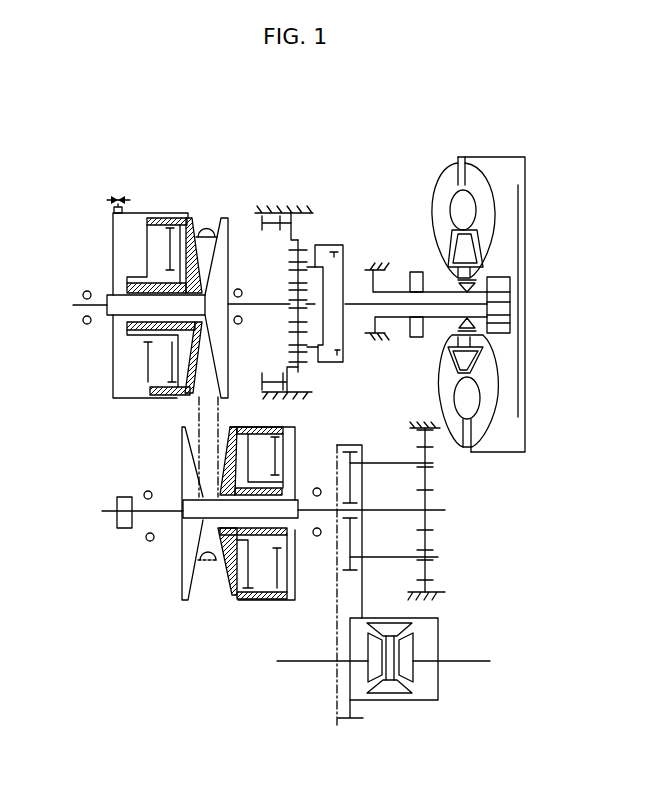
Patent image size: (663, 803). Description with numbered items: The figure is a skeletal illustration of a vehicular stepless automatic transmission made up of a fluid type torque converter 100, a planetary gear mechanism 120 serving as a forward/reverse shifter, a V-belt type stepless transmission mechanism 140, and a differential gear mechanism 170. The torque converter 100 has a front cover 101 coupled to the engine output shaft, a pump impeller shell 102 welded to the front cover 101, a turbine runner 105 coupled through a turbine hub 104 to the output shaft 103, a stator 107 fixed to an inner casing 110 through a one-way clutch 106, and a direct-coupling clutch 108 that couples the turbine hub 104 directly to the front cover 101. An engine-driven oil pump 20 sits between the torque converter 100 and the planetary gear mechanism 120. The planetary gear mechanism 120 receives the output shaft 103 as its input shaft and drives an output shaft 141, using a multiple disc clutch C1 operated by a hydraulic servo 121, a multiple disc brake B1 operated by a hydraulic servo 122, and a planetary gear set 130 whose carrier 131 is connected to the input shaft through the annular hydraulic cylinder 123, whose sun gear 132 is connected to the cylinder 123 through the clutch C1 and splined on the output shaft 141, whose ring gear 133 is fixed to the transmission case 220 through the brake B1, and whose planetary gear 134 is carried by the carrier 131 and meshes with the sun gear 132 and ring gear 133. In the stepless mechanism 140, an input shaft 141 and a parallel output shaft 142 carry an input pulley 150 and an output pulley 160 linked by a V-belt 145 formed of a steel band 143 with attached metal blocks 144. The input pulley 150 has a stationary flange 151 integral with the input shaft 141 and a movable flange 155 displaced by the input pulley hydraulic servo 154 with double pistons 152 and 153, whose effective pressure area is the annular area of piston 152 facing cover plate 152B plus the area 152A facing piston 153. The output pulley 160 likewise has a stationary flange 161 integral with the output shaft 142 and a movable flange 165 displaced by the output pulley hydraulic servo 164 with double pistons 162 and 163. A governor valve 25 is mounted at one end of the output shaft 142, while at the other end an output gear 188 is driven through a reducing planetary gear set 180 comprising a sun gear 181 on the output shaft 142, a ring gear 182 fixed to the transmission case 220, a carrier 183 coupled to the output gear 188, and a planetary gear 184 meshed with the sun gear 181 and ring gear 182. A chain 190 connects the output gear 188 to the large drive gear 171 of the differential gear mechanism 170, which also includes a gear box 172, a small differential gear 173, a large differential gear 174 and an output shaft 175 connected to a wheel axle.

The oil pump 20 is at (413, 340).
The governor valve 25 is at (120, 528).
The fluid type torque converter 100 is at (452, 152).
The front cover 101 is at (527, 183).
The pump impeller shell 102 is at (438, 178).
The output shaft 103 is at (473, 305).
The turbine hub 104 is at (510, 300).
The turbine runner 105 is at (495, 225).
The one-way clutch 106 is at (472, 282).
The stator 107 is at (468, 255).
The direct-coupling clutch 108 is at (518, 207).
The inner casing 110 is at (393, 287).
The planetary gear mechanism 120 is at (277, 200).
The hydraulic servo 121 is at (343, 246).
The hydraulic servo 122 is at (262, 228).
The annular hydraulic cylinder 123 is at (329, 247).
The planetary gear set 130 is at (309, 374).
The carrier 131 is at (343, 277).
The sun gear 132 is at (294, 298).
The ring gear 133 is at (307, 360).
The planetary gear 134 is at (312, 347).
The V-belt type stepless transmission mechanism 140 is at (166, 198).
The input shaft 141 is at (262, 303).
The output shaft 142 is at (163, 518).
The steel band 143 is at (185, 578).
The metal blocks 144 is at (208, 560).
The V-belt 145 is at (200, 397).
The input pulley 150 is at (198, 214).
The stationary flange 151 is at (222, 347).
The piston 152 is at (177, 368).
The piston area 152A is at (175, 353).
The cover plate 152B is at (113, 335).
The piston 153 is at (173, 367).
The input pulley hydraulic servo 154 is at (110, 243).
The movable flange 155 is at (177, 216).
The output pulley 160 is at (205, 615).
The stationary flange 161 is at (183, 568).
The piston 162 is at (296, 573).
The piston 163 is at (239, 583).
The output pulley hydraulic servo 164 is at (276, 606).
The movable flange 165 is at (230, 578).
The differential gear mechanism 170 is at (448, 607).
The large drive gear 171 is at (348, 688).
The gear box 172 is at (407, 701).
The small differential gear 173 is at (387, 686).
The large differential gear 174 is at (410, 670).
The output shaft 175 is at (302, 663).
The reducing planetary gear set 180 is at (468, 463).
The sun gear 181 is at (427, 495).
The ring gear 182 is at (422, 433).
The carrier 183 is at (408, 463).
The planetary gear 184 is at (431, 468).
The output gear 188 is at (337, 450).
The chain 190 is at (342, 730).
The transmission case 220 is at (323, 245).
The multiple disc brake B1 is at (295, 169).
The multiple disc clutch C1 is at (335, 177).